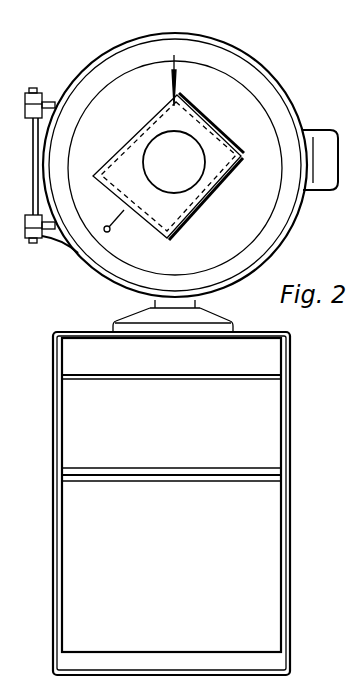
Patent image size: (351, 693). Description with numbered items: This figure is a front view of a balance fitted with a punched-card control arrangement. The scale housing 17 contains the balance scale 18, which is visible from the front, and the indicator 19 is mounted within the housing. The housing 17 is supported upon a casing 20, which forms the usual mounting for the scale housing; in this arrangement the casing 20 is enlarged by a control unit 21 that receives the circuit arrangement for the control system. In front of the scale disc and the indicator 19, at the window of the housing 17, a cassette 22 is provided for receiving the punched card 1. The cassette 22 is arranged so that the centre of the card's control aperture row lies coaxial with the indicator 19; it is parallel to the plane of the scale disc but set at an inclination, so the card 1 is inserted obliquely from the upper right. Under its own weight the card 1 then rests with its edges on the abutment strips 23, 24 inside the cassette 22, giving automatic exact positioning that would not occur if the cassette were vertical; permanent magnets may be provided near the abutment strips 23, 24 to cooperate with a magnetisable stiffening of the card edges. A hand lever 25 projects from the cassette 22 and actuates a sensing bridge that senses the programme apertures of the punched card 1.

The punched card 1 is at (218, 121).
The housing 17 is at (310, 121).
The balance scale 18 is at (72, 130).
The indicator 19 is at (170, 87).
The casing 20 is at (55, 357).
The control unit 21 is at (270, 520).
The cassette 22 is at (98, 180).
The abutment strip 23 is at (205, 178).
The abutment strip 24 is at (120, 229).
The hand lever 25 is at (105, 231).